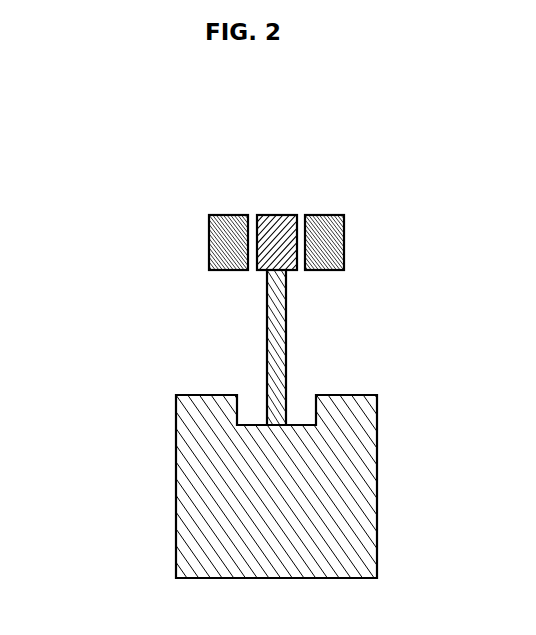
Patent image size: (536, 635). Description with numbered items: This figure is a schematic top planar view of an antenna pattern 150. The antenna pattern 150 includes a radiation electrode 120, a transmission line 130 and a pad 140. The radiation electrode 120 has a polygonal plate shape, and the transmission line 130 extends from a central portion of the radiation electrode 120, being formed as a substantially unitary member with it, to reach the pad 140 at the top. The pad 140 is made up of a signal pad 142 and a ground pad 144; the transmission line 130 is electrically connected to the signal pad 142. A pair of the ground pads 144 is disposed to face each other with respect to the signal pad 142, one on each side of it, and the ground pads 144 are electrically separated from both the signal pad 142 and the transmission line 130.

The antenna pattern 150 is at (33, 92).
The radiation electrode 120 is at (365, 488).
The transmission line 130 is at (278, 310).
The pad 140 is at (172, 145).
The signal pad 142 is at (280, 220).
The ground pad 144 is at (228, 220).